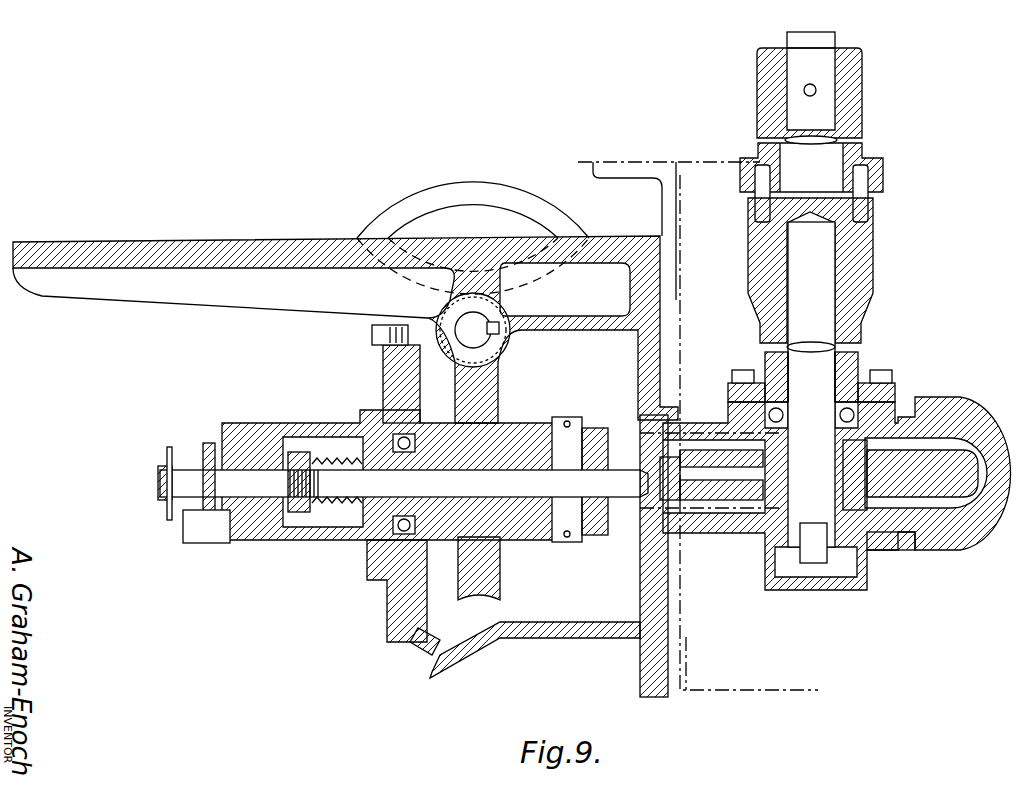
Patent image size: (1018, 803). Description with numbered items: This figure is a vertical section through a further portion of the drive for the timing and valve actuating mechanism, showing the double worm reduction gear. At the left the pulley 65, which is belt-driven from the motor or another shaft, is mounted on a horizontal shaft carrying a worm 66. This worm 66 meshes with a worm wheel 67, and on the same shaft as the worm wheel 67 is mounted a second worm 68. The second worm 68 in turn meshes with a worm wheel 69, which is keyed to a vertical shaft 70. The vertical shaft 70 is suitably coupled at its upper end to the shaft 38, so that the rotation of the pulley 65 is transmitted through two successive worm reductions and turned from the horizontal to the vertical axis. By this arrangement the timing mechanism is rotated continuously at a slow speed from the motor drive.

The shaft 38 is at (825, 42).
The pulley 65 is at (522, 190).
The worm 66 is at (510, 338).
The worm wheel 67 is at (490, 573).
The second worm 68 is at (762, 432).
The worm wheel 69 is at (963, 460).
The vertical shaft 70 is at (823, 365).